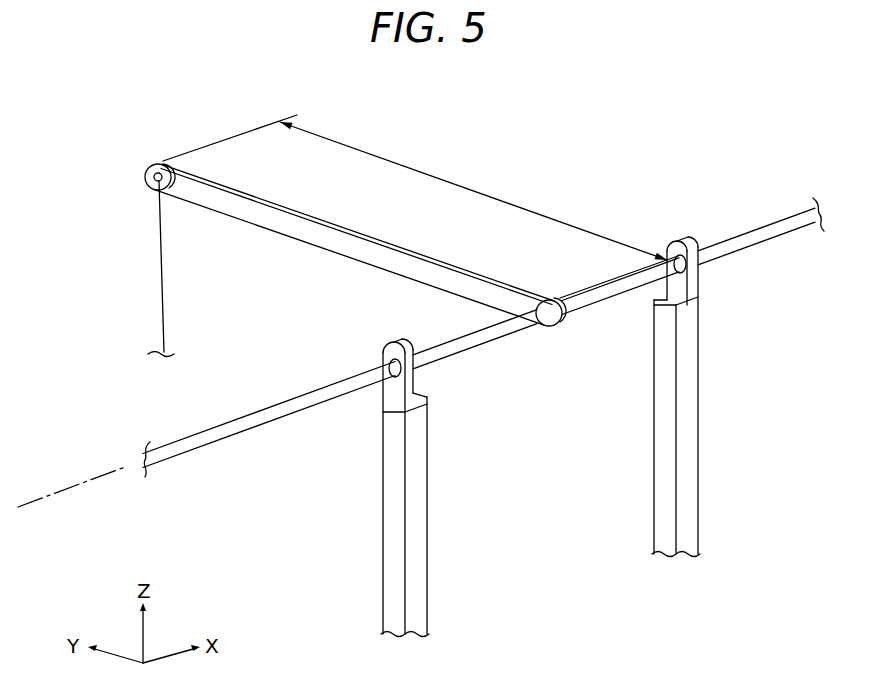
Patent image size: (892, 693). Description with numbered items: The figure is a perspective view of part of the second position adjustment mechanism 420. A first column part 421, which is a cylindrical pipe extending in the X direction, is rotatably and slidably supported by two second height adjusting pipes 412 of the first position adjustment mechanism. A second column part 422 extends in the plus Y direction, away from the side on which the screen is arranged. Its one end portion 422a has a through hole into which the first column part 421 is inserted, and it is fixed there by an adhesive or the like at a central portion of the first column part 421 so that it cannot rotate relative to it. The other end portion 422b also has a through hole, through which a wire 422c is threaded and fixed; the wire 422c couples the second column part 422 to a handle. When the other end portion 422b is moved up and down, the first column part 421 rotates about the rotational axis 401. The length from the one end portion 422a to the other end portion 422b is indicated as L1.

The rotational axis 401 is at (67, 488).
The second position adjustment mechanism 420 is at (746, 100).
The first column part 421 is at (489, 343).
The second height adjusting pipes 412 is at (427, 497).
The second column part 422 is at (318, 227).
The one end portion 422a is at (546, 298).
The other end portion 422b is at (162, 163).
The wire 422c is at (158, 283).